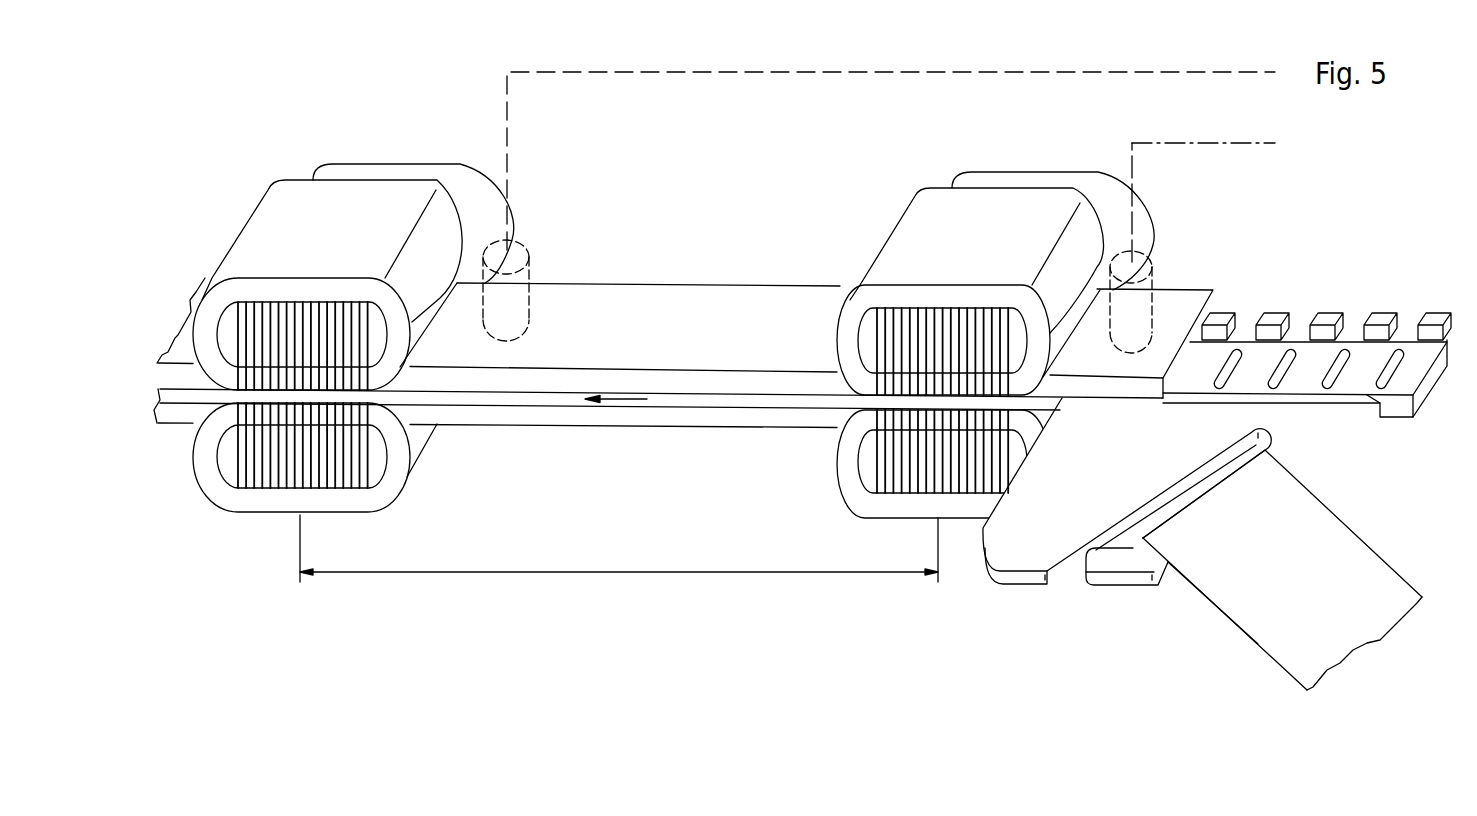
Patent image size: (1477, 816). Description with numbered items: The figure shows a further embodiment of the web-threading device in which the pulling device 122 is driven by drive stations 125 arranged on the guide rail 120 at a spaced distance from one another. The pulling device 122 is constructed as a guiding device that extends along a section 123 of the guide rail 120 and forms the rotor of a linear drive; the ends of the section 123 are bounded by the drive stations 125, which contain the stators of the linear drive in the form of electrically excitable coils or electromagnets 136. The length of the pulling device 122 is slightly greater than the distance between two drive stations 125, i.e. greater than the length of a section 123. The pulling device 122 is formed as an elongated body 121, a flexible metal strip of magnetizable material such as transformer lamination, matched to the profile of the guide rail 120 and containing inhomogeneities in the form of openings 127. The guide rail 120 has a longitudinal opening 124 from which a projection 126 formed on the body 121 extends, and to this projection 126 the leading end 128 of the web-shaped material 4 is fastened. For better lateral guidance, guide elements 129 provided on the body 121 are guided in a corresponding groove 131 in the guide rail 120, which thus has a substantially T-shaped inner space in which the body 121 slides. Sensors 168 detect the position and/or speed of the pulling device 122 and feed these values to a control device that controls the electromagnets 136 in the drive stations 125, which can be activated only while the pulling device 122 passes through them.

The web-shaped material 4 is at (1363, 571).
The guide rail 120 is at (688, 306).
The elongated body 121 is at (1362, 381).
The pulling device 122 is at (1320, 346).
The section of the guide rail 123 is at (622, 577).
The longitudinal opening 124 is at (170, 396).
The drive stations 125 is at (329, 209).
The projection 126 is at (1047, 550).
The openings 127 is at (1223, 370).
The leading end 128 is at (1192, 543).
The guide elements 129 is at (1428, 318).
The groove 131 is at (1217, 312).
The electromagnets 136 is at (282, 462).
The sensors 168 is at (528, 300).